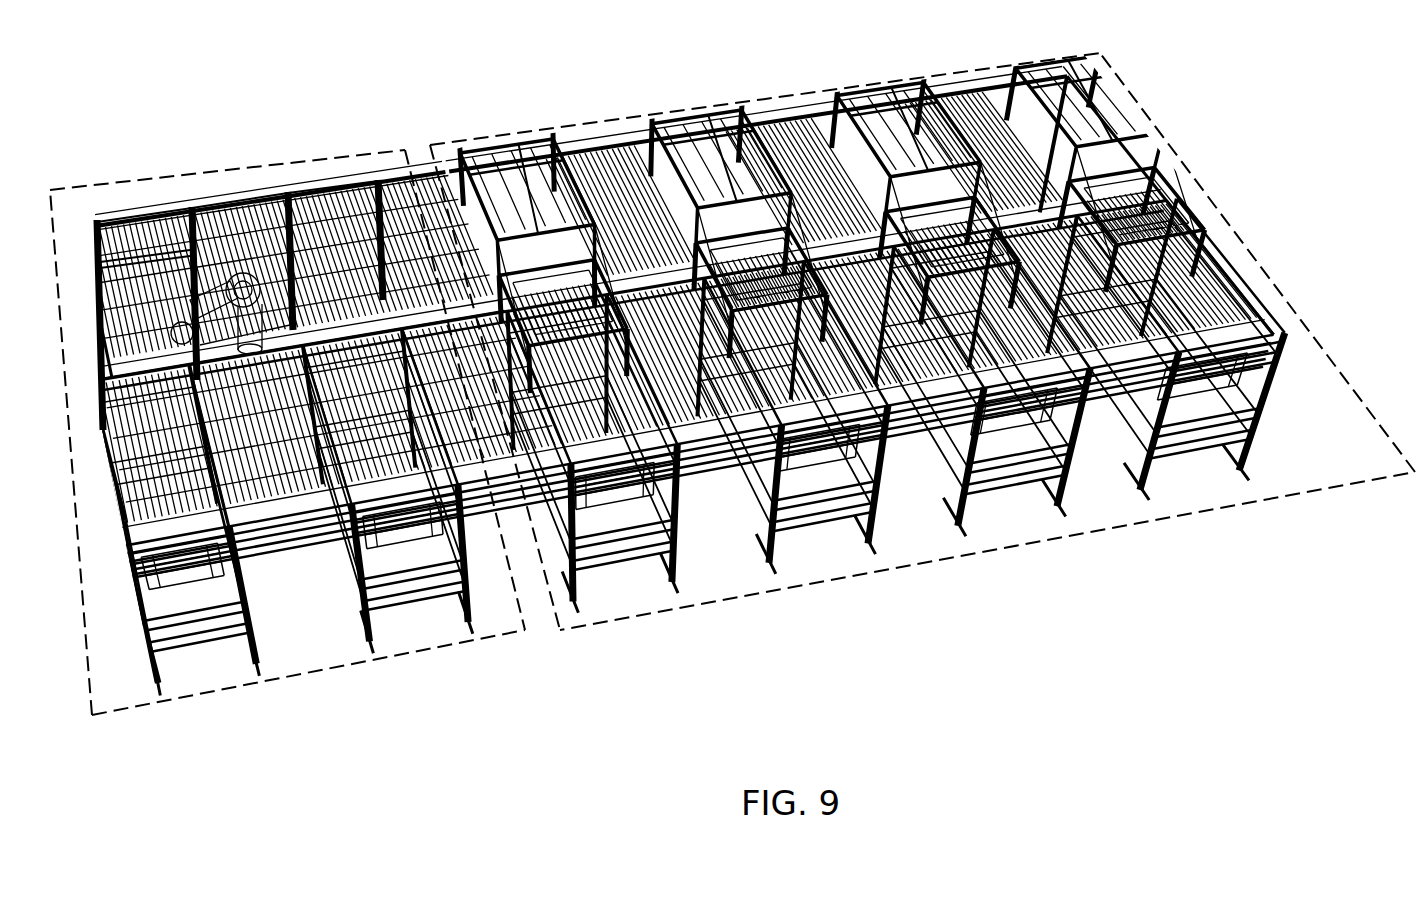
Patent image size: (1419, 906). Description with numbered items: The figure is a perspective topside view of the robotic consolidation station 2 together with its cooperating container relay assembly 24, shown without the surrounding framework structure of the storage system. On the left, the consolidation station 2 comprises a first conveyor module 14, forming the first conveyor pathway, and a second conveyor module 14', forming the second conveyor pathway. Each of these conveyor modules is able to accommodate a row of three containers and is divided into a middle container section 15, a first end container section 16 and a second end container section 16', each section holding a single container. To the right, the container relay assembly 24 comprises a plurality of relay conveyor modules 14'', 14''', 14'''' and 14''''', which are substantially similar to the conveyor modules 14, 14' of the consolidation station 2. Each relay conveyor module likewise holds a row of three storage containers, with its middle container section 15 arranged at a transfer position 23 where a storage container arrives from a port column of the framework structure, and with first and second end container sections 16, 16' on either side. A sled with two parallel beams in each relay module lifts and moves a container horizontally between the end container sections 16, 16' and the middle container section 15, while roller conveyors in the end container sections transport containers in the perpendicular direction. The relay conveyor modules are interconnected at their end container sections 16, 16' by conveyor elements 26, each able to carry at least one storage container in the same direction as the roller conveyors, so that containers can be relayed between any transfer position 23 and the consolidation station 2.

The consolidation station 2 is at (235, 165).
The first conveyor module 14 is at (388, 547).
The second conveyor module 14' is at (174, 579).
The relay conveyor module 14'' is at (592, 505).
The relay conveyor module 14''' is at (793, 469).
The relay conveyor module 14'''' is at (982, 436).
The relay conveyor module 14''''' is at (1166, 402).
The middle container section 15 is at (831, 200).
The first end container section 16 is at (320, 217).
The second end container section 16' is at (587, 597).
The transfer position 23 is at (555, 285).
The container relay assembly 24 is at (606, 120).
The conveyor element 26 is at (722, 490).